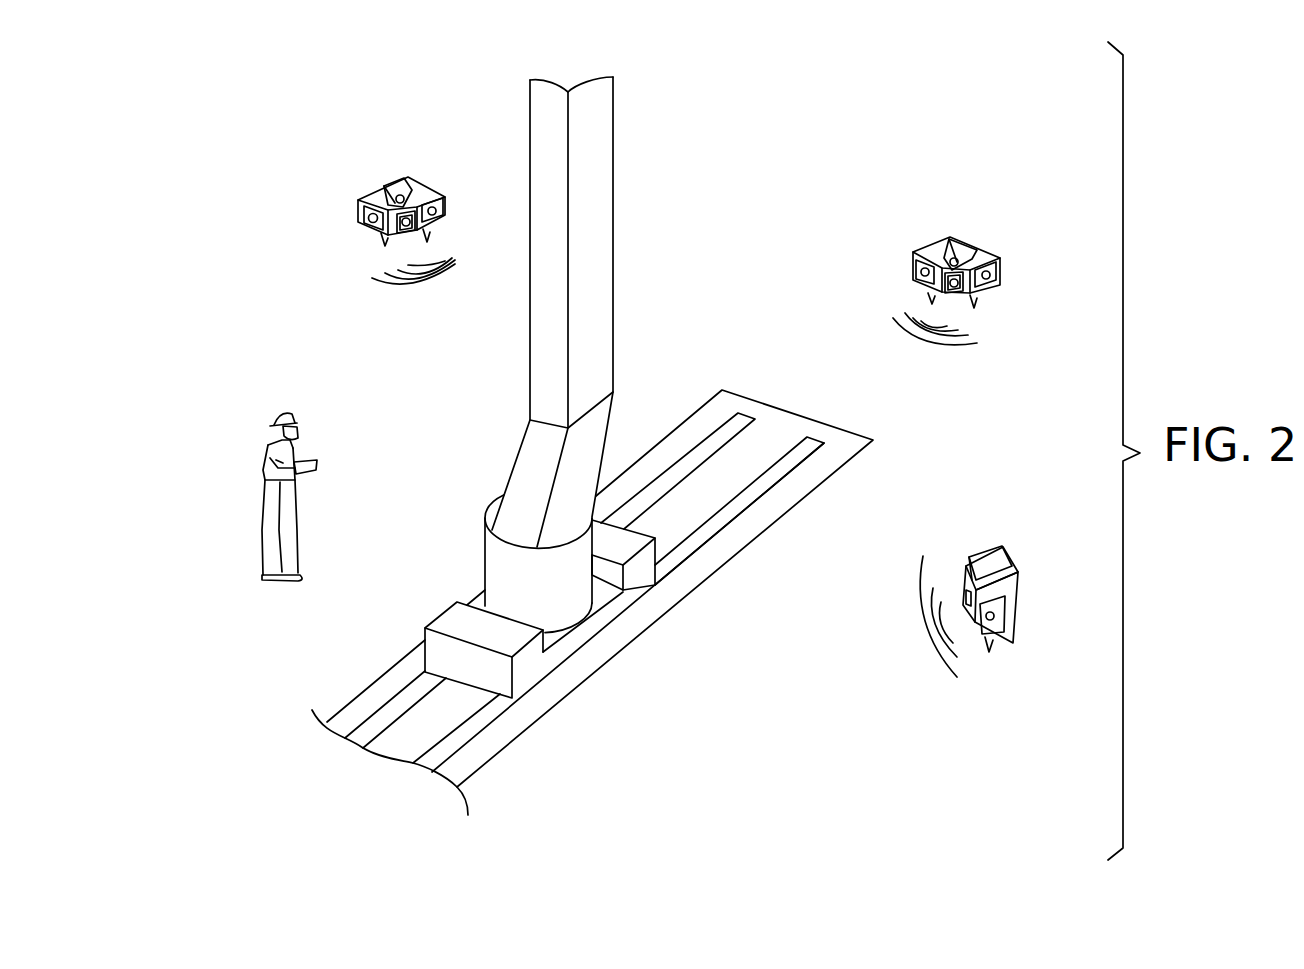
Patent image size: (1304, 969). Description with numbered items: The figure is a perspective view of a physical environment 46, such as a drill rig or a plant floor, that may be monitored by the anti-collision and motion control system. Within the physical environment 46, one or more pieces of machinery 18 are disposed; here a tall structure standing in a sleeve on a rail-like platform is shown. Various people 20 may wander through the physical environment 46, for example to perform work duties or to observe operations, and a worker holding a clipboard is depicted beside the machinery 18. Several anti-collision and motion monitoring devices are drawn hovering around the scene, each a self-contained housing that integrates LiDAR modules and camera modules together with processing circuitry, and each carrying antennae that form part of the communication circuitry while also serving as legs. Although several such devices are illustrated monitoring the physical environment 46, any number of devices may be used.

The machinery 18 is at (497, 445).
The people 20 is at (262, 456).
The physical environment 46 is at (212, 205).